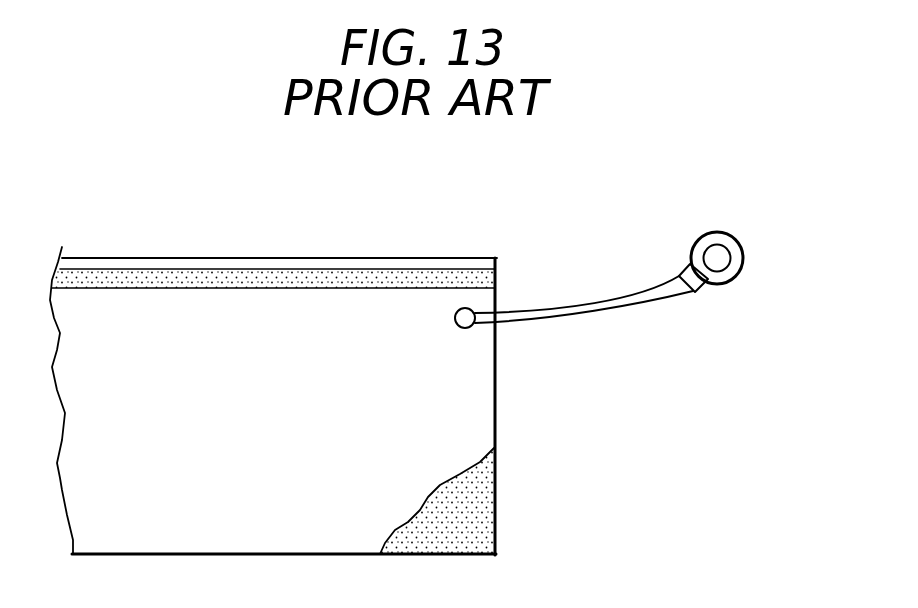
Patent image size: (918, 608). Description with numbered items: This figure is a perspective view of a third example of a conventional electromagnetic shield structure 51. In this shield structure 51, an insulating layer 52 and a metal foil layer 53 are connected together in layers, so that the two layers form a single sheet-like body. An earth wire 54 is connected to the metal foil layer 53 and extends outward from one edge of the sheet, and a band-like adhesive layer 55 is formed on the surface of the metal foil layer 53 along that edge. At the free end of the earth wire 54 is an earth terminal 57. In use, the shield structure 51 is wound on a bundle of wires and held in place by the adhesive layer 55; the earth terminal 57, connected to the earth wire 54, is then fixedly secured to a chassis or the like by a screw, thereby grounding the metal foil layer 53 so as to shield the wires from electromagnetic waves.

The shield structure 51 is at (366, 230).
The insulating layer 52 is at (487, 502).
The metal foil layer 53 is at (472, 415).
The earth wire 54 is at (638, 300).
The band-like adhesive layer 55 is at (233, 280).
The earth terminal 57 is at (717, 287).